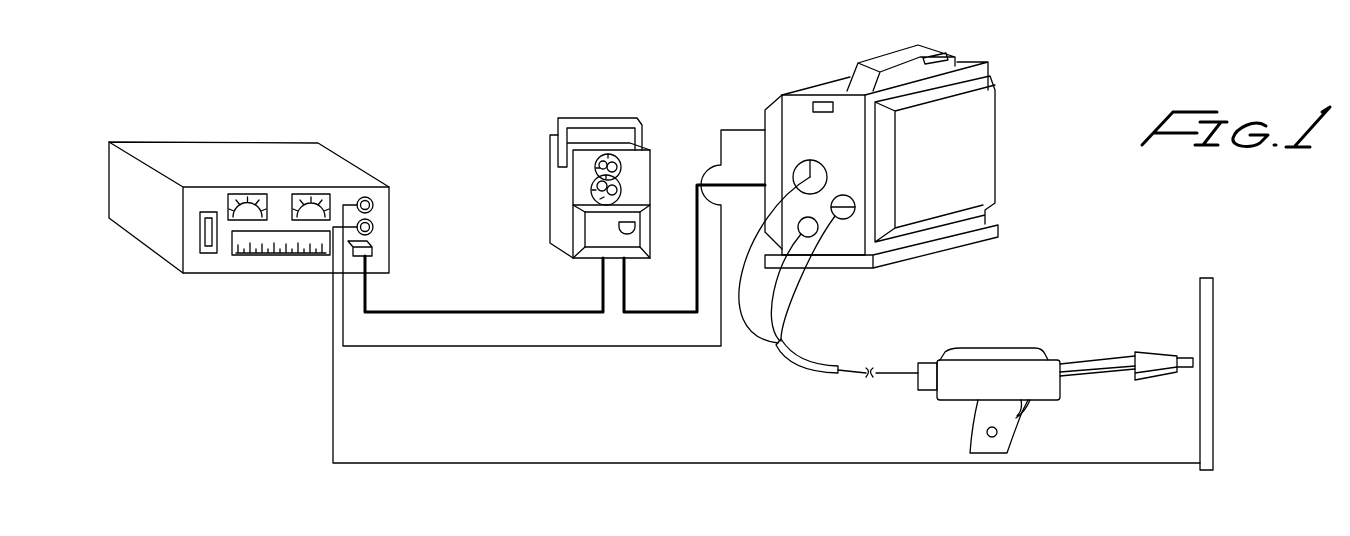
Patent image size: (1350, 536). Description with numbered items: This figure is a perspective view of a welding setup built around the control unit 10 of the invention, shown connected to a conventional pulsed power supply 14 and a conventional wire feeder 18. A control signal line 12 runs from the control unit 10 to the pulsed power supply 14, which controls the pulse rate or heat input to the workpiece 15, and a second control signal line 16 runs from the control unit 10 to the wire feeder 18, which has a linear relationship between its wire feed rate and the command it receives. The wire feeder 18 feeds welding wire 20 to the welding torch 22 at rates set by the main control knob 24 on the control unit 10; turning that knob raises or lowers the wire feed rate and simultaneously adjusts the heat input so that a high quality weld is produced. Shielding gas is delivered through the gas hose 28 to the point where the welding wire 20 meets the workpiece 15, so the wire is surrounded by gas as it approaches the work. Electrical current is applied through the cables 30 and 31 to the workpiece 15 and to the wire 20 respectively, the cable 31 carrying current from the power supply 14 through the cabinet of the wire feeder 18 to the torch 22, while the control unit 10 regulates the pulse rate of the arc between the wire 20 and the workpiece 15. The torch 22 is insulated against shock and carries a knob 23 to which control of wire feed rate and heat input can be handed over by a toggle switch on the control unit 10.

The control unit 10 is at (587, 180).
The control signal line 12 is at (426, 308).
The pulsed power supply 14 is at (244, 152).
The workpiece 15 is at (1215, 380).
The control signal line 16 is at (665, 310).
The wire feeder 18 is at (978, 158).
The welding wire 20 is at (1188, 357).
The welding torch 22 is at (1055, 382).
The knob 23 is at (987, 432).
The main control knob 24 is at (620, 167).
The gas hose 28 is at (788, 325).
The cable 30 is at (485, 465).
The cable 31 is at (533, 347).